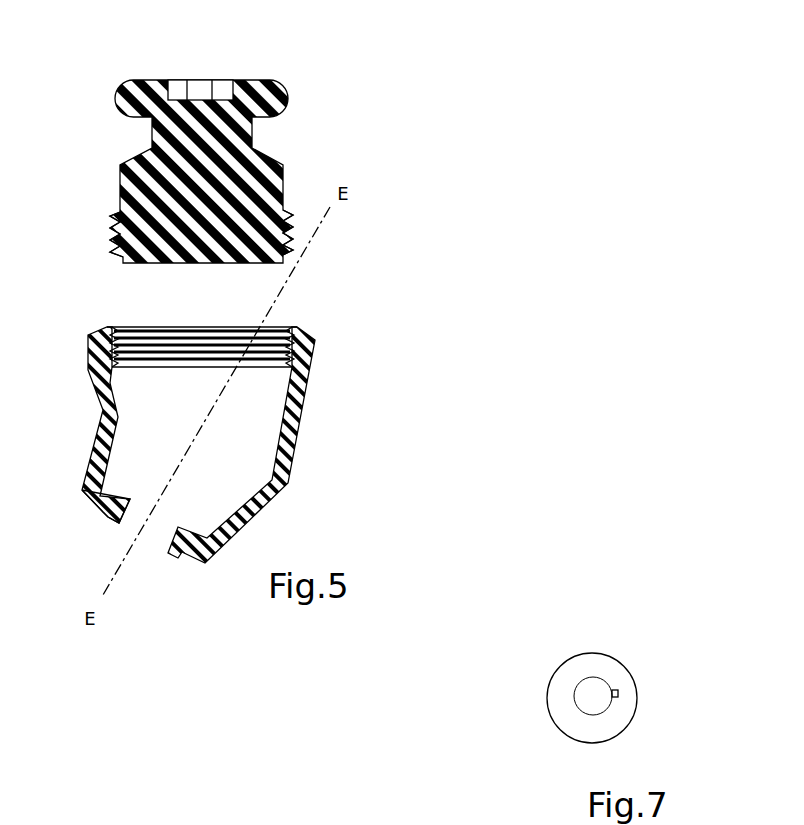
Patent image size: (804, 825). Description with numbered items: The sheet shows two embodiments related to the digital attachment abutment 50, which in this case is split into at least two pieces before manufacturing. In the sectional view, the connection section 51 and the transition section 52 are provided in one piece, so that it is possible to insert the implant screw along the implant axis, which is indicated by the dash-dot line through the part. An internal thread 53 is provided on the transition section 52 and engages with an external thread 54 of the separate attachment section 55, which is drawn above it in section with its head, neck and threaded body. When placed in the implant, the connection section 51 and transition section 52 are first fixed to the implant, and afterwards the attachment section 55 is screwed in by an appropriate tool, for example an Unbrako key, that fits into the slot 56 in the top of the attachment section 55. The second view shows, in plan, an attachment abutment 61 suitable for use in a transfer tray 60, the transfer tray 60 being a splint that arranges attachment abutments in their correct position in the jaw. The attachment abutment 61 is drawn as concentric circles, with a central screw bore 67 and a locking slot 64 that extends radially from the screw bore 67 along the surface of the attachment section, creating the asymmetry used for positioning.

In FIG. 5, the digital attachment abutment 50 is at (395, 238).
In FIG. 5, the connection section 51 is at (103, 512).
In FIG. 5, the transition section 52 is at (270, 433).
In FIG. 5, the internal thread 53 is at (125, 327).
In FIG. 5, the external thread 54 is at (113, 238).
In FIG. 5, the attachment section 55 is at (152, 127).
In FIG. 5, the slot 56 is at (205, 85).
In FIG. 7, the transfer tray 60 is at (418, 812).
In FIG. 7, the attachment abutment 61 is at (582, 655).
In FIG. 7, the locking slot 64 is at (618, 692).
In FIG. 7, the screw bore 67 is at (587, 697).